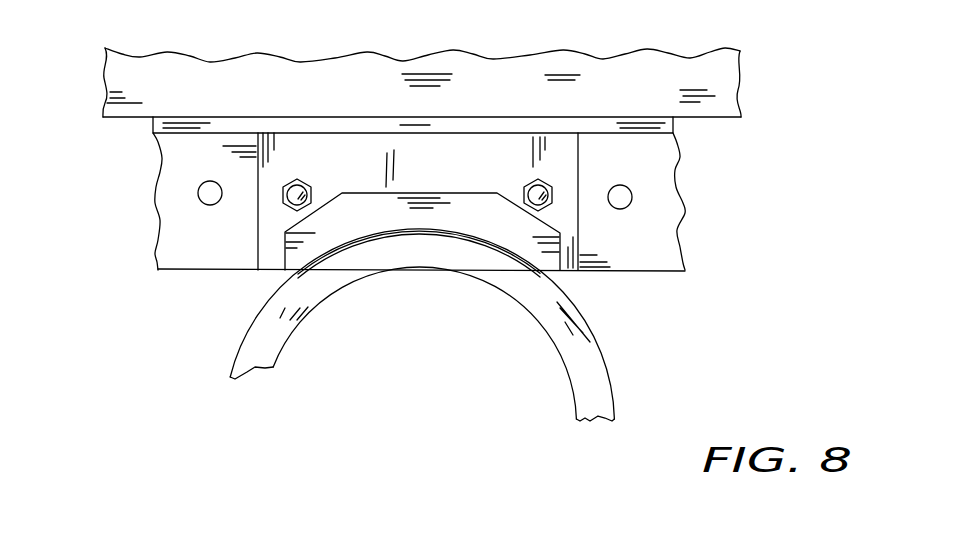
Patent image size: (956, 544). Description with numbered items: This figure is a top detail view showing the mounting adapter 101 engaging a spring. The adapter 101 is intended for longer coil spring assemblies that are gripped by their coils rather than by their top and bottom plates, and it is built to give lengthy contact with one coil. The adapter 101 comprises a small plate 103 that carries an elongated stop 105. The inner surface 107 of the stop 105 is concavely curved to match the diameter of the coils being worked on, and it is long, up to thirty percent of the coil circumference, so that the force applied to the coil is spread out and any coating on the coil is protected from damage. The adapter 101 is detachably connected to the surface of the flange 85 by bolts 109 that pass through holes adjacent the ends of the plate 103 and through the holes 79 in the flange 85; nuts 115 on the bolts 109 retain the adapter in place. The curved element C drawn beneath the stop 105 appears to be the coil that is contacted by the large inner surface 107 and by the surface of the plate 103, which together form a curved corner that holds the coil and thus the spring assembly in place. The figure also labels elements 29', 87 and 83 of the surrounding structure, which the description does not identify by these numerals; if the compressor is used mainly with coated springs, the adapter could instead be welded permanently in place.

The support plate 29' is at (480, 80).
The spacer bar 87 is at (188, 133).
The flange 85 is at (134, 222).
The hole 79 is at (632, 199).
The side member 83 is at (643, 262).
The mounting adapter 101 is at (207, 246).
The small plate 103 is at (241, 264).
The elongated stop 105 is at (447, 192).
The inner surface 107 is at (480, 243).
The bolt 109 is at (301, 179).
The nut 115 is at (298, 180).
The curved segment C is at (278, 350).